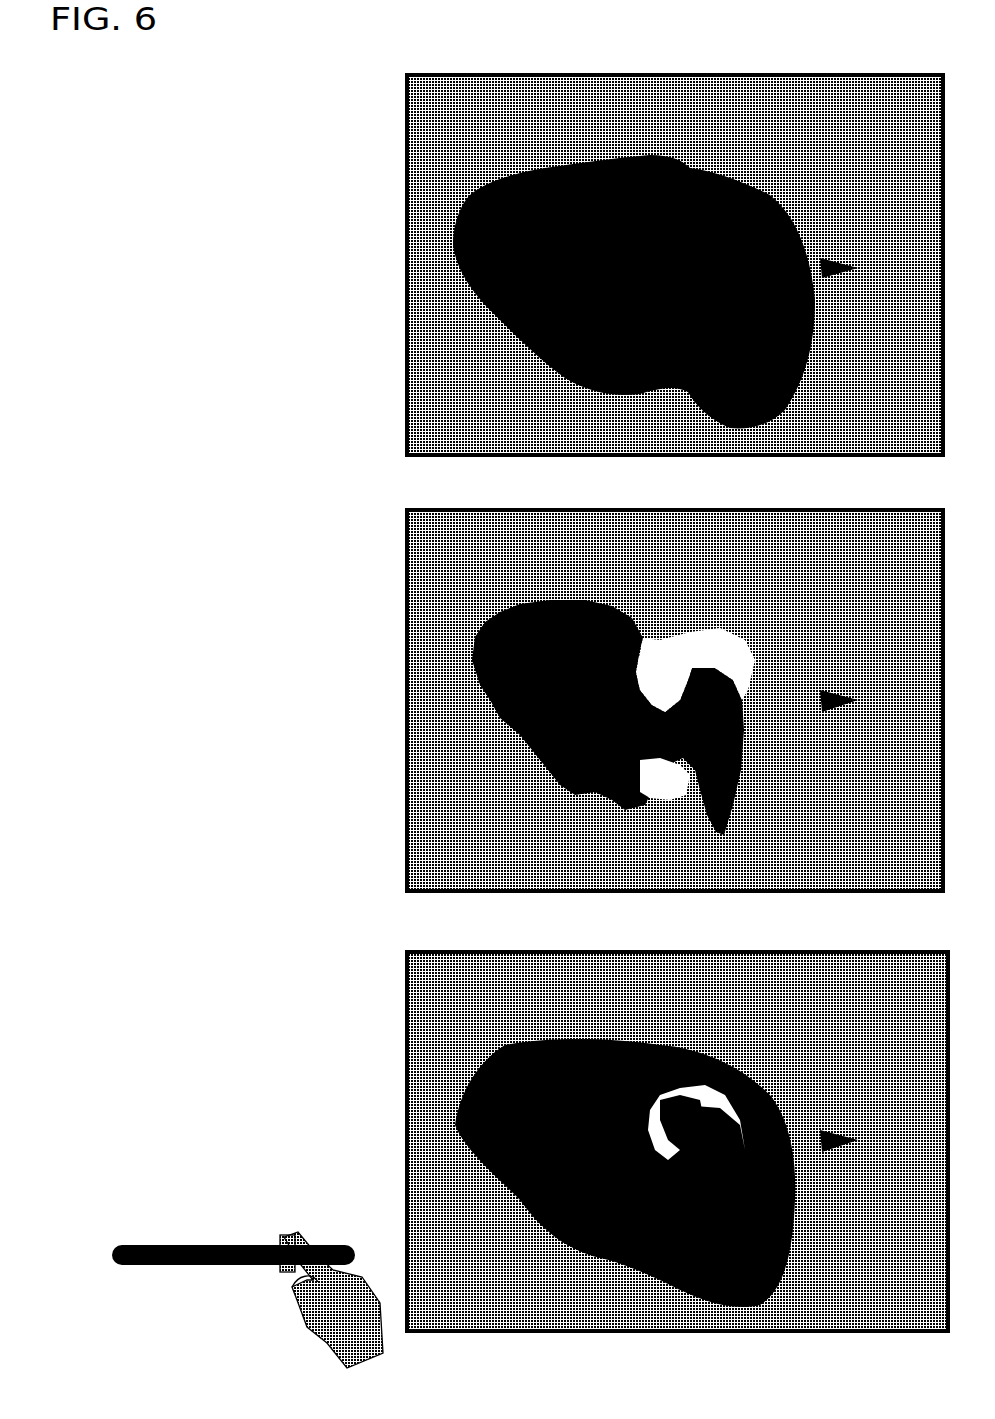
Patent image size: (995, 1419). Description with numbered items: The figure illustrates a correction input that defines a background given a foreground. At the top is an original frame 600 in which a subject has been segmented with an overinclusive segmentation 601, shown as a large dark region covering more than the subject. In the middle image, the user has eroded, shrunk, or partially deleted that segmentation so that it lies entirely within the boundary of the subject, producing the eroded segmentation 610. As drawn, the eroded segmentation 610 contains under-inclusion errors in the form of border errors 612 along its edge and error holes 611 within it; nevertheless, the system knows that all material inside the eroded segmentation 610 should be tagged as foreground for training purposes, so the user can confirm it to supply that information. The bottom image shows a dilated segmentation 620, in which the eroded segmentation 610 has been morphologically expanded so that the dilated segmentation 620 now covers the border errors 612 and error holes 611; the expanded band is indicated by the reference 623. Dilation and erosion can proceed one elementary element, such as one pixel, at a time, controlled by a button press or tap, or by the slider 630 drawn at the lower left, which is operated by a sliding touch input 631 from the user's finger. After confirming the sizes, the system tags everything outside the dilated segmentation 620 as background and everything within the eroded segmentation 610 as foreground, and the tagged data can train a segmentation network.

The original frame 600 is at (405, 349).
The overinclusive segmentation 601 is at (405, 427).
The eroded segmentation 610 is at (535, 743).
The error holes 611 is at (662, 675).
The border errors 612 is at (618, 817).
The dilated segmentation 620 is at (430, 1155).
The dilated region 623 is at (673, 1097).
The slider 630 is at (235, 1243).
The sliding touch input 631 is at (362, 1322).